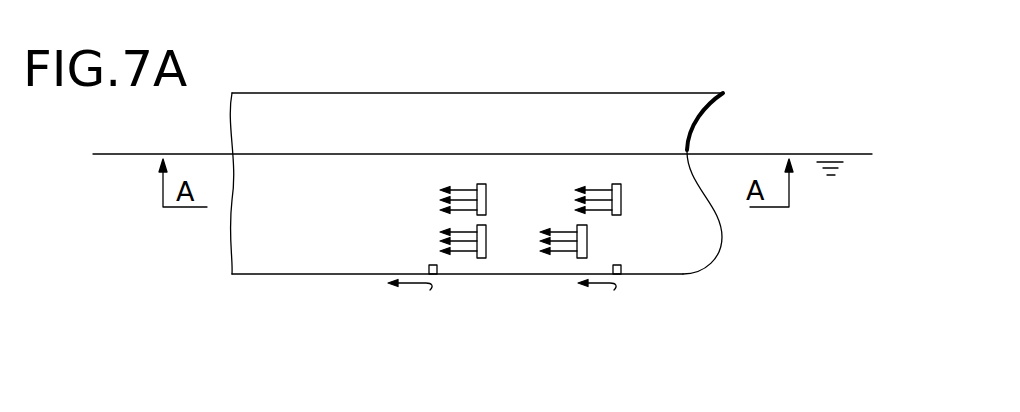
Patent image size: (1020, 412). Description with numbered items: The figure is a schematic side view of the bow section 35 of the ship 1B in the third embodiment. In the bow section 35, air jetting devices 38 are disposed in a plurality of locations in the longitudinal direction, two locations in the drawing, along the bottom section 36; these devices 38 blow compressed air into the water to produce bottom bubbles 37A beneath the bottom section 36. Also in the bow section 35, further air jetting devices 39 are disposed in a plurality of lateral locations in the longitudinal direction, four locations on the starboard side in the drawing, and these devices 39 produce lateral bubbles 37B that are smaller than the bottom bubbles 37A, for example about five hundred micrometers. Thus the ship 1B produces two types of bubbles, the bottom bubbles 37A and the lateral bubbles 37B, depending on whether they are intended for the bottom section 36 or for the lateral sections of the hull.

The ship 1B is at (294, 85).
The bow section 35 is at (638, 93).
The bottom section 36 is at (667, 274).
The bottom bubbles 37A is at (430, 290).
The lateral bubbles 37B is at (477, 226).
The air jetting devices 38 is at (444, 272).
The air jetting devices 39 is at (487, 240).